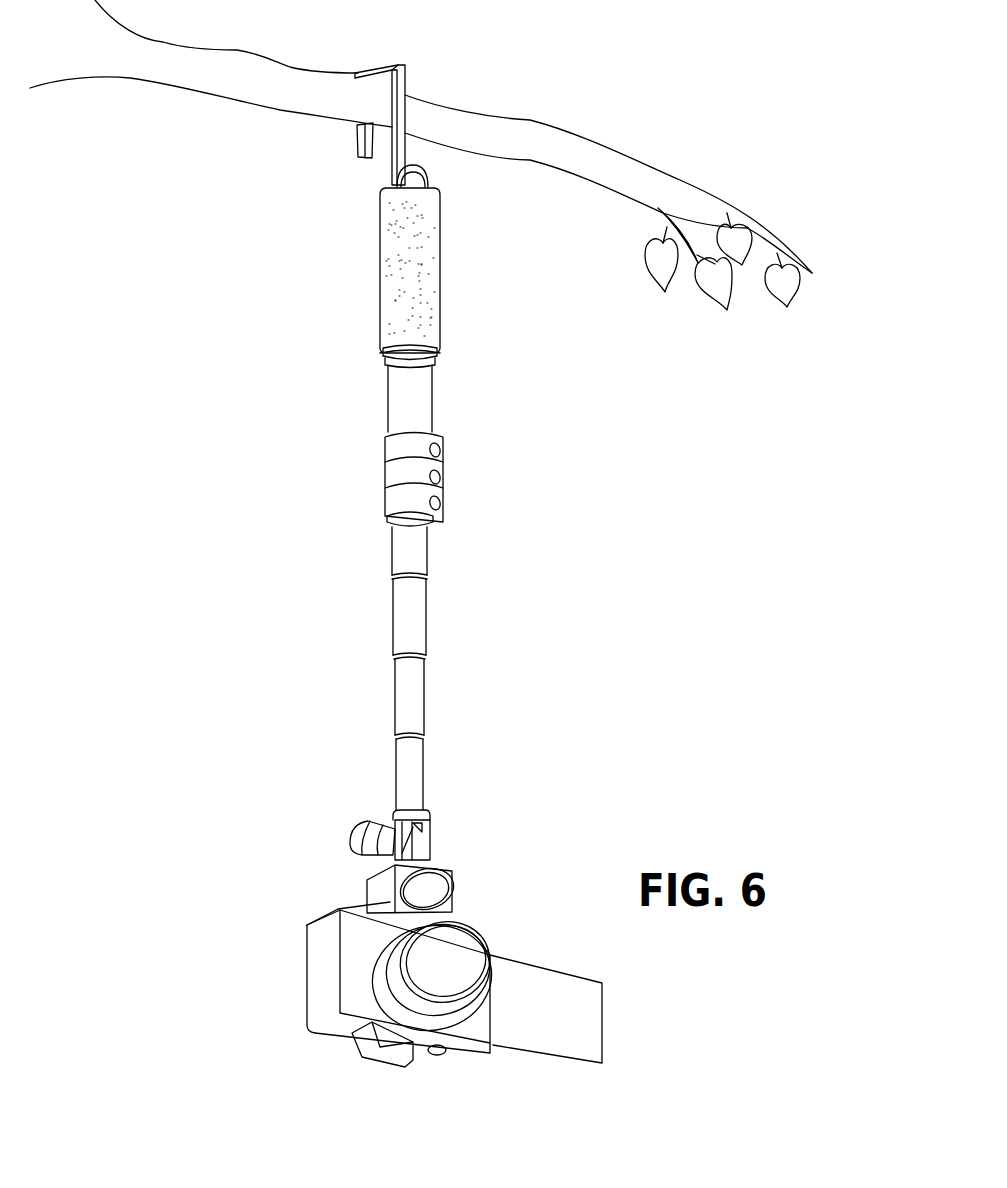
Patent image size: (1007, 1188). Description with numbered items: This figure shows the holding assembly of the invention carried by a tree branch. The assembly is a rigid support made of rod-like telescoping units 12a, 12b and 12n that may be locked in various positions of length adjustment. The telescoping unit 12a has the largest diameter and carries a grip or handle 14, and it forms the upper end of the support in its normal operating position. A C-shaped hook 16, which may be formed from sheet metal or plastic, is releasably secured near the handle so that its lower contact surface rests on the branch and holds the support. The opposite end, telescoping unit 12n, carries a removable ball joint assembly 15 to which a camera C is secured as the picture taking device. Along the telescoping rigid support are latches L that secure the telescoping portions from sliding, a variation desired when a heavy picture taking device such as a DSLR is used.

The C-shaped hook 16 is at (397, 108).
The grip or handle 14 is at (442, 263).
The telescoping unit 12a is at (432, 358).
The latches L is at (385, 478).
The telescoping unit 12b is at (422, 402).
The telescoping unit 12n is at (425, 777).
The ball joint assembly 15 is at (417, 842).
The camera C is at (467, 970).